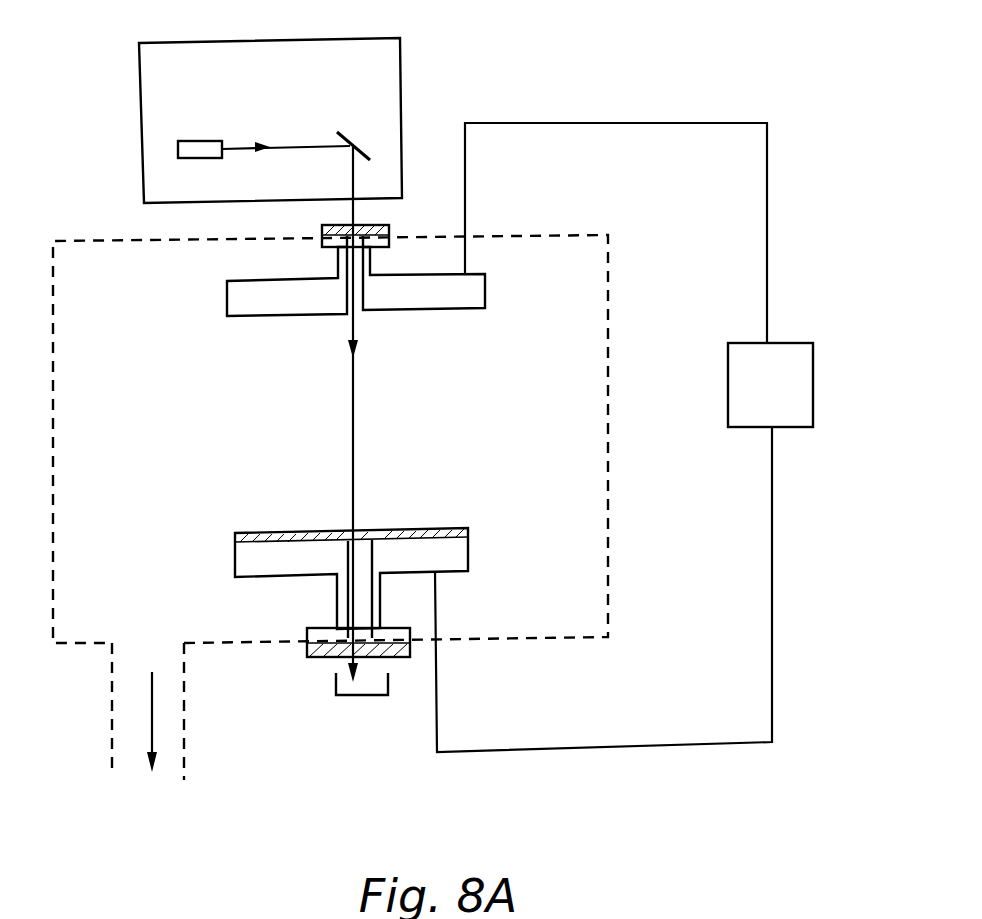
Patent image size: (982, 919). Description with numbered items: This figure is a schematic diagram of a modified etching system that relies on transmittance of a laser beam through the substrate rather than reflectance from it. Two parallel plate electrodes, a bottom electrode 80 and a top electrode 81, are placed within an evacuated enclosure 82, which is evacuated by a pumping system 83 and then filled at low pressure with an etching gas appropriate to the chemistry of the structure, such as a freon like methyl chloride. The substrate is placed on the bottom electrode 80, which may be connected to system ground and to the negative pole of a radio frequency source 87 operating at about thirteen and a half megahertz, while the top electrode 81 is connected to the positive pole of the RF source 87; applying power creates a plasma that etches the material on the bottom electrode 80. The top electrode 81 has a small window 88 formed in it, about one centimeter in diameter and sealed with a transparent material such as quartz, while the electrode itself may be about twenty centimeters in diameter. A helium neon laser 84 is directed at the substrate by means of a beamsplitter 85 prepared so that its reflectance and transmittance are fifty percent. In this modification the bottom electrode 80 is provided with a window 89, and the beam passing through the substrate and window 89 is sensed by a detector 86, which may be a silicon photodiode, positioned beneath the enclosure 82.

The bottom electrode 80 is at (472, 547).
The top electrode 81 is at (440, 300).
The evacuated enclosure 82 is at (607, 307).
The pumping system 83 is at (184, 718).
The helium neon laser 84 is at (190, 150).
The beamsplitter 85 is at (360, 150).
The detector 86 is at (350, 697).
The radio frequency source 87 is at (800, 360).
The window 88 is at (385, 225).
The window 89 is at (328, 653).